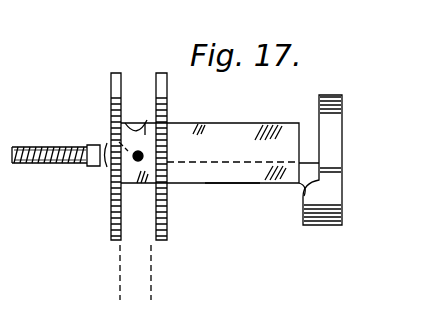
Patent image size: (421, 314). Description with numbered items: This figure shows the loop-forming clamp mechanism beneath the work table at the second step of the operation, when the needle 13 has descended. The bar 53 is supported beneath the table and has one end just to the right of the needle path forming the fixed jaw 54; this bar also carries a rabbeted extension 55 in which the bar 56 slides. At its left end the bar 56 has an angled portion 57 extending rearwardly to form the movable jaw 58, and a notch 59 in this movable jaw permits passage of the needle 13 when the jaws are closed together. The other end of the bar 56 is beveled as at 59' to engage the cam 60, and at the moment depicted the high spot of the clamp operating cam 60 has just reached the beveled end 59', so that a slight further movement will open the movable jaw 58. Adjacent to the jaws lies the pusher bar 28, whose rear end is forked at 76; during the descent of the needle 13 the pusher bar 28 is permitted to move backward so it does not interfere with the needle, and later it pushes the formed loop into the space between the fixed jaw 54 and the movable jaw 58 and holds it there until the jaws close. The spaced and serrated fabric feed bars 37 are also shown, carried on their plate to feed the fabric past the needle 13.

The needle 13 is at (168, 123).
The pusher bar 28 is at (155, 258).
The fabric feed bars 37 is at (150, 200).
The bar 53 is at (280, 113).
The fixed jaw 54 is at (141, 153).
The rabbeted extension 55 is at (262, 183).
The bar 56 is at (205, 184).
The angled portion 57 is at (110, 129).
The movable jaw 58 is at (133, 125).
The notch 59 is at (101, 177).
The beveled end 59' is at (350, 172).
The cam 60 is at (330, 203).
The forked end 76 is at (97, 168).